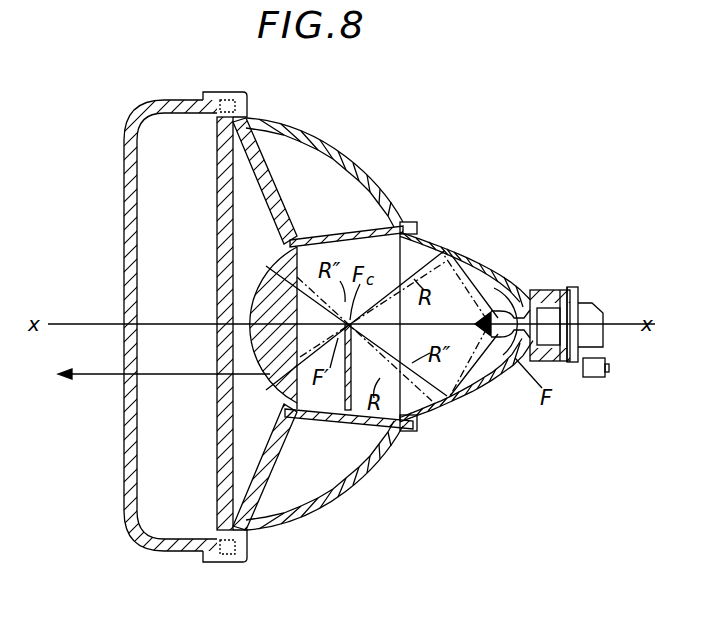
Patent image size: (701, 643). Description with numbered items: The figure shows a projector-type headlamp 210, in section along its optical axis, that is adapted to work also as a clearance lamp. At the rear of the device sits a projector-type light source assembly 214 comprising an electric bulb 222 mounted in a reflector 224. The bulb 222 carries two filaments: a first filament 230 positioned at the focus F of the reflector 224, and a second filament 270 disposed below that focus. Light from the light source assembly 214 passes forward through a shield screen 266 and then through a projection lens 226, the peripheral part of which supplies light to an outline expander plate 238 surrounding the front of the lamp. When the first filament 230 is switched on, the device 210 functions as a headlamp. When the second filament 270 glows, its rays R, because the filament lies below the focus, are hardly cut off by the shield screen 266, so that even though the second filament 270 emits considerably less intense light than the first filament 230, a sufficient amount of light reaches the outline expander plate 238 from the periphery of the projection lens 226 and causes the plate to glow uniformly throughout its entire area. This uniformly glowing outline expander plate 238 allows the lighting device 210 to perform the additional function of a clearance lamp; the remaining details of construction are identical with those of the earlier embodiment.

The headlamp 210 is at (425, 109).
The projector-type light source assembly 214 is at (431, 237).
The electric bulb 222 is at (545, 288).
The reflector 224 is at (464, 250).
The projection lens 226 is at (256, 300).
The first filament 230 is at (517, 302).
The outline expander plate 238 is at (243, 484).
The shield screen 266 is at (346, 406).
The second filament 270 is at (505, 356).